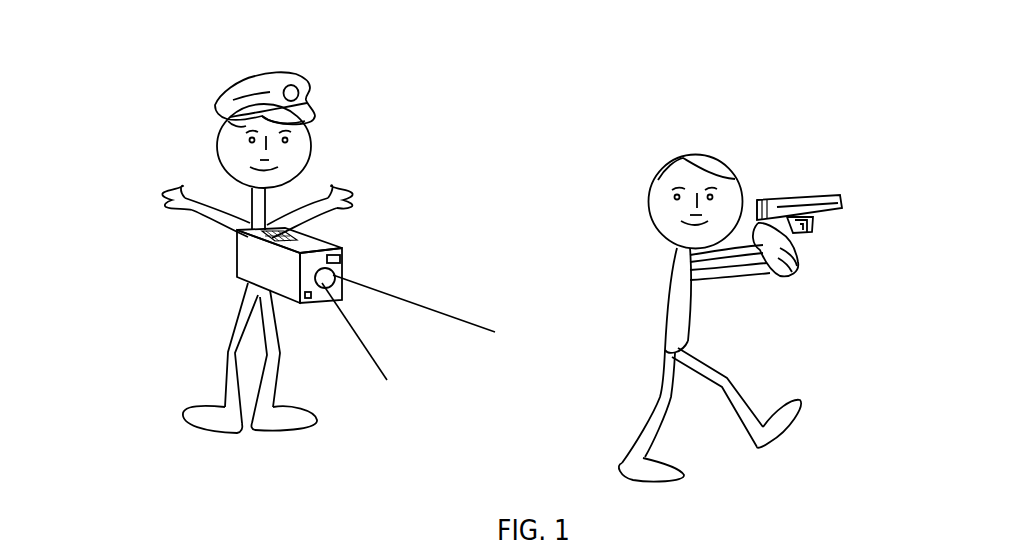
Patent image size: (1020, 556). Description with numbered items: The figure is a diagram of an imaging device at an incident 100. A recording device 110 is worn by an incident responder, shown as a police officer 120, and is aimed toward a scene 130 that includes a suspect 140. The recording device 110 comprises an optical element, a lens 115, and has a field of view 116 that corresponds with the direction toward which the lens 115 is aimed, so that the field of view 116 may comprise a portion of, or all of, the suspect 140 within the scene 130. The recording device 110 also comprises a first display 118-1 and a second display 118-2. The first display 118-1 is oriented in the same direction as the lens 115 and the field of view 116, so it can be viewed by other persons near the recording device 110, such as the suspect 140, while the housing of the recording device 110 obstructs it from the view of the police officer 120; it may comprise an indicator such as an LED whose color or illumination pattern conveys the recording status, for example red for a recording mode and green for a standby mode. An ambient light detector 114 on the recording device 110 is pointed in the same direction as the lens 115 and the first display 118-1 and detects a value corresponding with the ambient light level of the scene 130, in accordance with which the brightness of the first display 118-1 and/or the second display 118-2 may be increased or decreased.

The incident 100 is at (126, 101).
The recording device 110 is at (237, 250).
The ambient light detector 114 is at (302, 303).
The lens 115 is at (335, 276).
The field of view 116 is at (472, 300).
The first display 118-1 is at (343, 257).
The second display 118-2 is at (347, 207).
The police officer 120 is at (283, 66).
The scene 130 is at (890, 186).
The suspect 140 is at (690, 155).